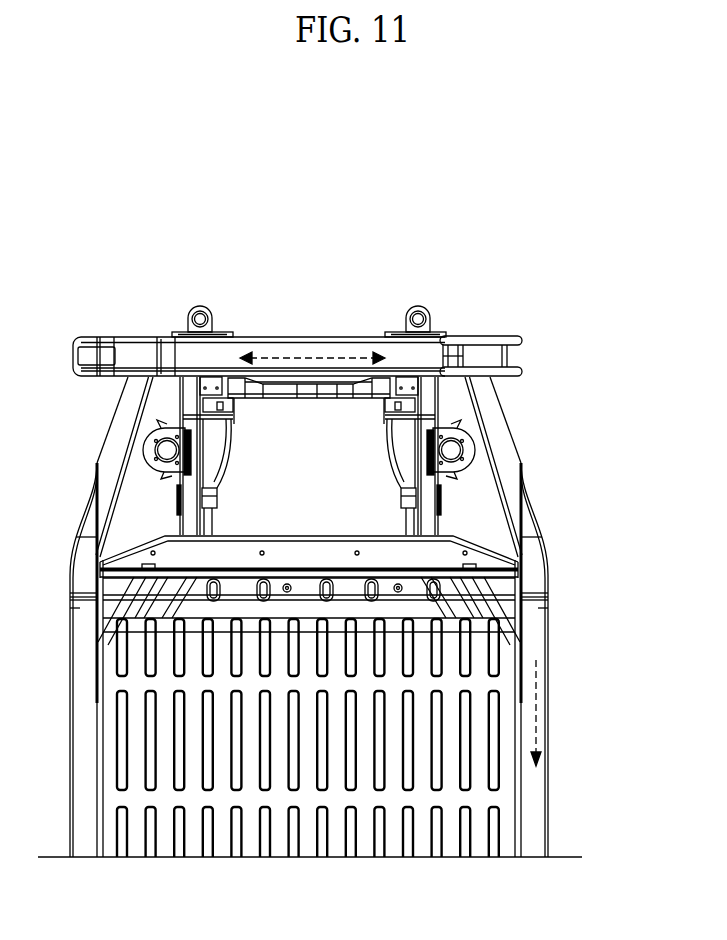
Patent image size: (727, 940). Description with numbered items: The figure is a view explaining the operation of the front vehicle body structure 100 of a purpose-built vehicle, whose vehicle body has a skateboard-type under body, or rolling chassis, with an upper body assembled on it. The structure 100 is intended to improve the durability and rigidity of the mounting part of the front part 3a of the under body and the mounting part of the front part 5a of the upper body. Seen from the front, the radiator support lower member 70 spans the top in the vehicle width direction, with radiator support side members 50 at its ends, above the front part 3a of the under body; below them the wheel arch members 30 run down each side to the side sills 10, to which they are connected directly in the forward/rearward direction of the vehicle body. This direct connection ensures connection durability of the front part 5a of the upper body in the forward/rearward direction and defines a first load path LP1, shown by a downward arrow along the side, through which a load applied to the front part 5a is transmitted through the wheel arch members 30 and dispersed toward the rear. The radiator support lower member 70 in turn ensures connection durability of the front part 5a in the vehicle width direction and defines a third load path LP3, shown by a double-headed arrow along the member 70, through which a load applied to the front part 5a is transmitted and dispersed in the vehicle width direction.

The front vehicle body structure 100 is at (320, 169).
The radiator support lower member 70 is at (297, 338).
The radiator support side member 50 is at (475, 338).
The front part of the upper body 5a is at (540, 332).
The front part of the under body 3a is at (452, 493).
The wheel arch member 30 is at (540, 507).
The side sill 10 is at (552, 777).
The first load path LP1 is at (545, 701).
The third load path LP3 is at (270, 357).